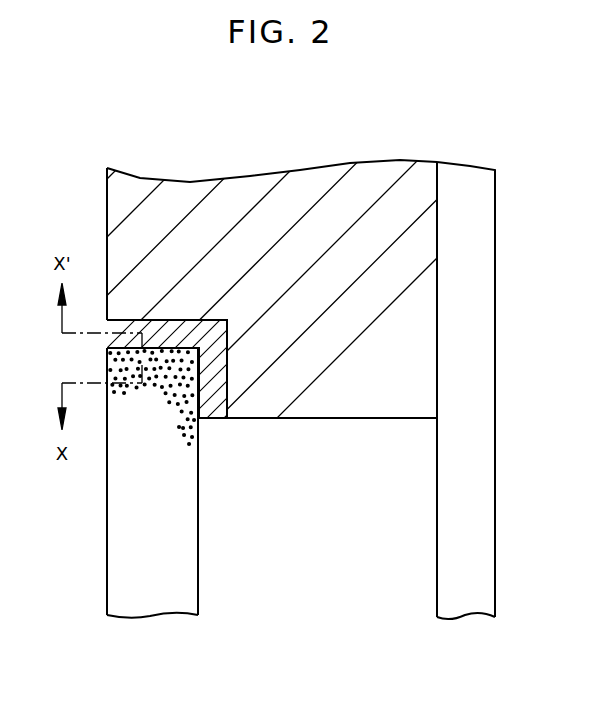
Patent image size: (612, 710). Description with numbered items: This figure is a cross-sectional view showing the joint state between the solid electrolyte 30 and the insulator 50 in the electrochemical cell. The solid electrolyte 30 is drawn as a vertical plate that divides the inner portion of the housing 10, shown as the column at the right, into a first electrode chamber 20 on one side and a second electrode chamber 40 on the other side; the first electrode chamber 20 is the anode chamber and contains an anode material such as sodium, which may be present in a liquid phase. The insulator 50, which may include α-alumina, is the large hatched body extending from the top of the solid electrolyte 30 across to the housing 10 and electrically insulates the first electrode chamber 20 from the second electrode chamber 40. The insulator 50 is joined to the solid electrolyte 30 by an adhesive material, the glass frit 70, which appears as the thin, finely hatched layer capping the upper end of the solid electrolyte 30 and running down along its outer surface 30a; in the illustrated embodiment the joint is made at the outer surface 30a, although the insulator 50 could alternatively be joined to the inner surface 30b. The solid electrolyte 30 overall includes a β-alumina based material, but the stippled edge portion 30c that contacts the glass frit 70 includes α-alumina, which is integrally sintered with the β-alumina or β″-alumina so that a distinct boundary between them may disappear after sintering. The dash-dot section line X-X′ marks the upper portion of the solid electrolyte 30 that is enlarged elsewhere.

The housing 10 is at (467, 583).
The first electrode chamber 20 is at (297, 517).
The solid electrolyte 30 is at (153, 582).
The outer surface 30a is at (198, 578).
The inner surface 30b is at (107, 578).
The edge portion 30c is at (117, 365).
The second electrode chamber 40 is at (52, 517).
The insulator 50 is at (307, 213).
The glass frit 70 is at (190, 333).